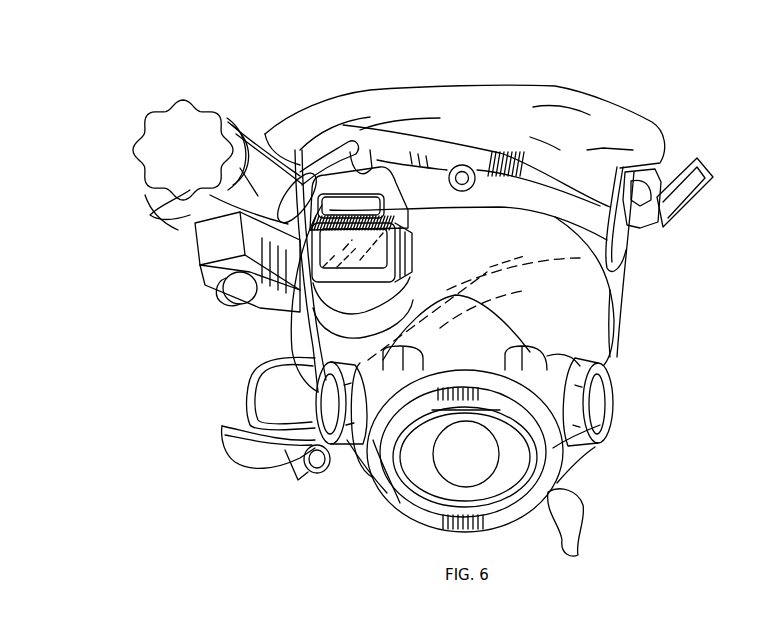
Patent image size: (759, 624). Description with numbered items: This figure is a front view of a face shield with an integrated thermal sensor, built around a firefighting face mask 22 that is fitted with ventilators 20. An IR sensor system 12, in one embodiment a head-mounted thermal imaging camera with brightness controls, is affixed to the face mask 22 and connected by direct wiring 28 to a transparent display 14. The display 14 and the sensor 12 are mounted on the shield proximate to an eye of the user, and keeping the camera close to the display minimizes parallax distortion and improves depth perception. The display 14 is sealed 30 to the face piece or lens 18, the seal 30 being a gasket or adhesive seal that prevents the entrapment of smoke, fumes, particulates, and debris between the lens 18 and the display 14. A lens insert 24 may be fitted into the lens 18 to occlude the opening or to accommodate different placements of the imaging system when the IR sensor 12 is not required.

The IR sensor system 12 is at (178, 148).
The direct wiring 28 is at (338, 147).
The firefighting face mask 22 is at (617, 357).
The lens 18 is at (342, 351).
The transparent display 14 is at (365, 241).
The lens insert 24 is at (380, 297).
The seal 30 is at (365, 331).
The ventilators 20 is at (335, 410).